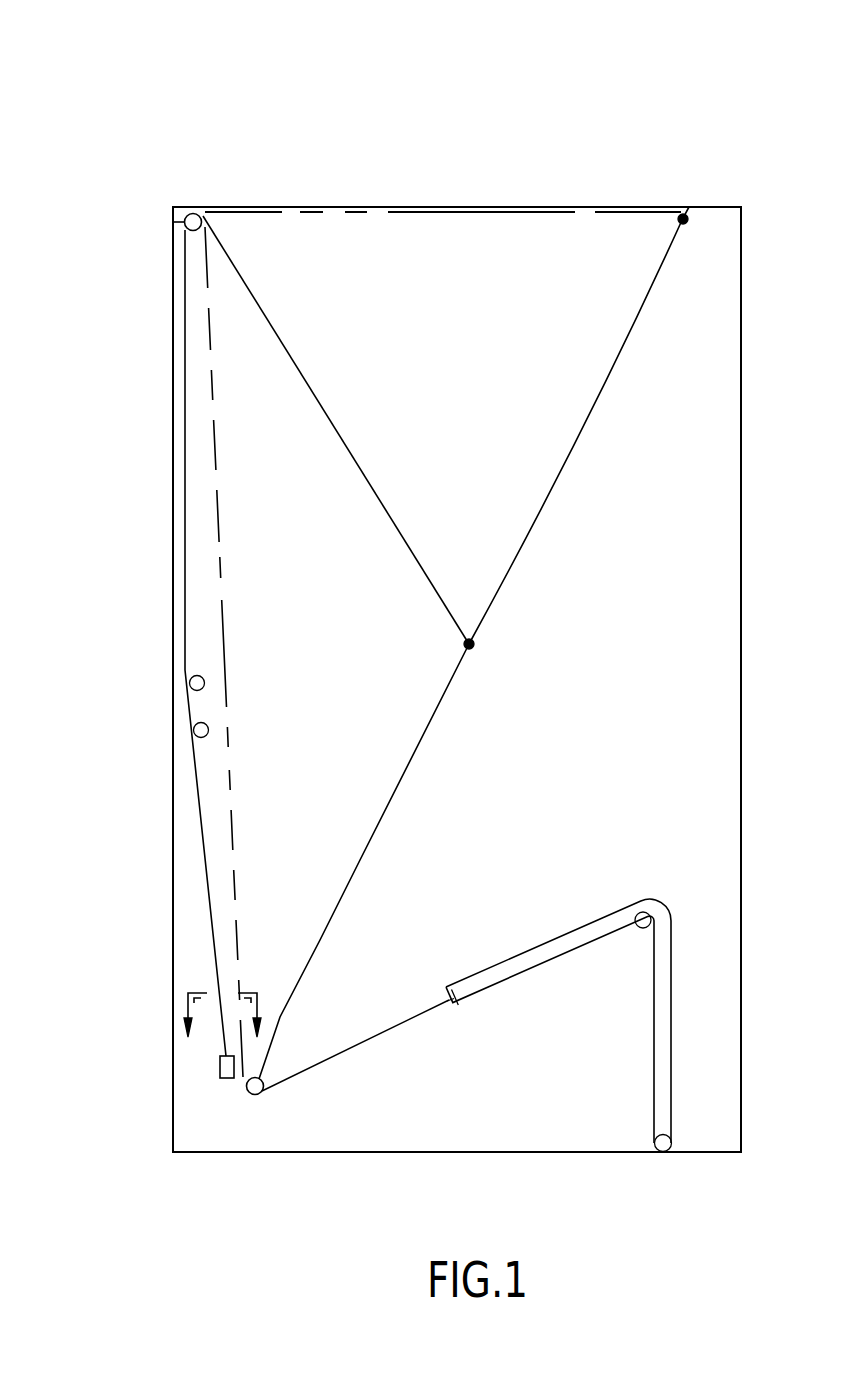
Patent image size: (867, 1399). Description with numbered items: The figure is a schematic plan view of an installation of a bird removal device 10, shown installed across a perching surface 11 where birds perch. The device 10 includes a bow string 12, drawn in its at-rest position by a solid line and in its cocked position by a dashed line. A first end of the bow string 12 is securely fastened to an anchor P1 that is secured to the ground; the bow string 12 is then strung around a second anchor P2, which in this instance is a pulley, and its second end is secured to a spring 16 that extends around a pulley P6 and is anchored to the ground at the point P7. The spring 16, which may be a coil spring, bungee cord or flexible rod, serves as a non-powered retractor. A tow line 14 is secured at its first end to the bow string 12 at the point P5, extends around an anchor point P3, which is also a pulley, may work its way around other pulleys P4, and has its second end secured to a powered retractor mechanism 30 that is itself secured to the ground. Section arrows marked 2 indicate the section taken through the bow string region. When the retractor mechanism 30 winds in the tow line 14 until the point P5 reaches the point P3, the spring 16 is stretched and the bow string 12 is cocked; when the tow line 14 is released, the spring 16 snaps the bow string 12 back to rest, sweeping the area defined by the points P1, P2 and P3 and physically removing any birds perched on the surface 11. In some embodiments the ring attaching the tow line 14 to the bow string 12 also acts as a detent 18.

The bird removal device 10 is at (572, 107).
The perching surface 11 is at (438, 253).
The bow string 12 is at (578, 440).
The tow line 14 is at (363, 473).
The spring 16 is at (563, 942).
The detent 18 is at (193, 730).
The powered retractor mechanism 30 is at (220, 1066).
The section line 2 is at (223, 997).
The anchor P1 is at (686, 214).
The second anchor P2 is at (262, 1094).
The anchor point P3 is at (181, 210).
The other pulleys P4 is at (191, 683).
The point of attachment of tow line to bow string P5 is at (480, 650).
The pulley P6 is at (641, 912).
The ground anchor point of spring P7 is at (663, 1152).